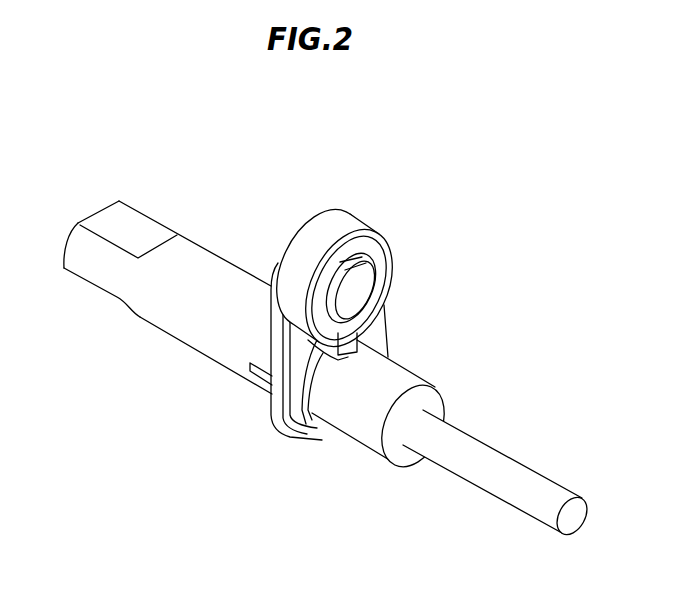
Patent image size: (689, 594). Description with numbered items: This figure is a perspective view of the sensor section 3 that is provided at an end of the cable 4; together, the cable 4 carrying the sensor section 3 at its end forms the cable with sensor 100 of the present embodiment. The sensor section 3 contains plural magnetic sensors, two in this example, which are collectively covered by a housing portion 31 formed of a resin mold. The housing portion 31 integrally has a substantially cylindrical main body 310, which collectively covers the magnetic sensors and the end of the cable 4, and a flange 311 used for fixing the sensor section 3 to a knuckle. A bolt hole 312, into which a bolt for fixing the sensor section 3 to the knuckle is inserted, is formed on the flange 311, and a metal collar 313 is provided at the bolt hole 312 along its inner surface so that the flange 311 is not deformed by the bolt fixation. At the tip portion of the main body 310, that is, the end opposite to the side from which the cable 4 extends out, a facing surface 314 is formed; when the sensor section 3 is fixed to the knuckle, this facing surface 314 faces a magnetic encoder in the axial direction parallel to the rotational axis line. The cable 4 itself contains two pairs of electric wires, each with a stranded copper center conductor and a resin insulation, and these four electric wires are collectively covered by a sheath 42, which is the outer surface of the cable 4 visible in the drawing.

The sensor section 3 is at (310, 334).
The cable with sensor 100 is at (387, 269).
The main body 310 is at (182, 325).
The flange 311 is at (278, 410).
The bolt hole 312 is at (365, 286).
The metal collar 313 is at (372, 298).
The facing surface 314 is at (100, 288).
The housing portion 31 is at (447, 383).
The cable 4 is at (498, 478).
The sheath 42 is at (500, 490).